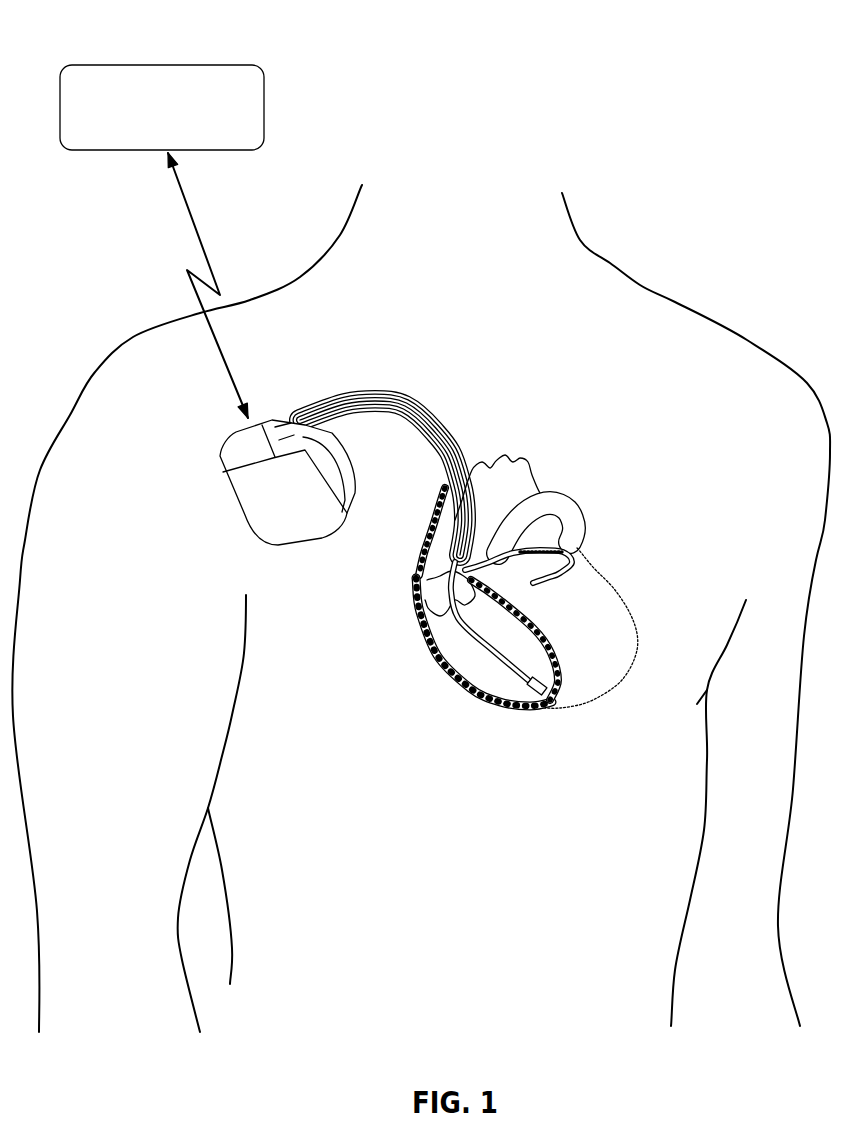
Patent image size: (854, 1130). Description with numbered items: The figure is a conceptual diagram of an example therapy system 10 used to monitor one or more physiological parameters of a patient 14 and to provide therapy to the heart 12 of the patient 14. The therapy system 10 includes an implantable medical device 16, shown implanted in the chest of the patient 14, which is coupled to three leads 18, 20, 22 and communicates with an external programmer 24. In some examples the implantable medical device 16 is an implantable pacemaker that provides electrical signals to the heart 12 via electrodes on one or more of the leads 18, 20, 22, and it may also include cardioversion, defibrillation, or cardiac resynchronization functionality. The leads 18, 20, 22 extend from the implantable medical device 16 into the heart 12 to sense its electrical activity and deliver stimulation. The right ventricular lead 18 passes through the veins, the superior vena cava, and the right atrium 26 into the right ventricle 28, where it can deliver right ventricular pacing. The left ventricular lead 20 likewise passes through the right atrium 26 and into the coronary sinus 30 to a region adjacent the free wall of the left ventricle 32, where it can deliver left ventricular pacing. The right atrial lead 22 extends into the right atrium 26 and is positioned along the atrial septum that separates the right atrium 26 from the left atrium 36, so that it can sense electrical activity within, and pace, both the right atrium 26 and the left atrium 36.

The therapy system 10 is at (638, 73).
The heart 12 is at (506, 619).
The patient 14 is at (675, 302).
The implantable medical device 16 is at (238, 505).
The right ventricular lead 18 is at (413, 415).
The left ventricular lead 20 is at (470, 443).
The right atrial lead 22 is at (435, 450).
The programmer 24 is at (151, 133).
The right atrium 26 is at (428, 595).
The right ventricle 28 is at (473, 660).
The coronary sinus 30 is at (485, 557).
The left ventricle 32 is at (598, 612).
The left atrium 36 is at (527, 507).